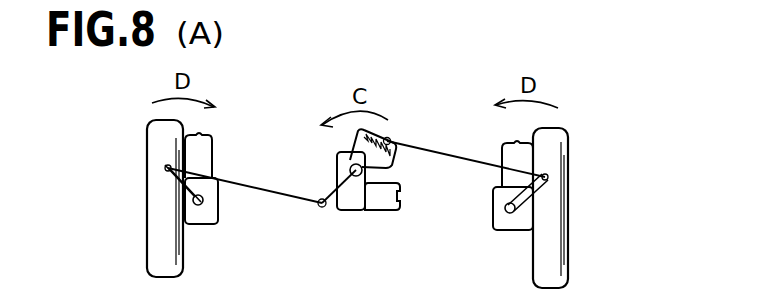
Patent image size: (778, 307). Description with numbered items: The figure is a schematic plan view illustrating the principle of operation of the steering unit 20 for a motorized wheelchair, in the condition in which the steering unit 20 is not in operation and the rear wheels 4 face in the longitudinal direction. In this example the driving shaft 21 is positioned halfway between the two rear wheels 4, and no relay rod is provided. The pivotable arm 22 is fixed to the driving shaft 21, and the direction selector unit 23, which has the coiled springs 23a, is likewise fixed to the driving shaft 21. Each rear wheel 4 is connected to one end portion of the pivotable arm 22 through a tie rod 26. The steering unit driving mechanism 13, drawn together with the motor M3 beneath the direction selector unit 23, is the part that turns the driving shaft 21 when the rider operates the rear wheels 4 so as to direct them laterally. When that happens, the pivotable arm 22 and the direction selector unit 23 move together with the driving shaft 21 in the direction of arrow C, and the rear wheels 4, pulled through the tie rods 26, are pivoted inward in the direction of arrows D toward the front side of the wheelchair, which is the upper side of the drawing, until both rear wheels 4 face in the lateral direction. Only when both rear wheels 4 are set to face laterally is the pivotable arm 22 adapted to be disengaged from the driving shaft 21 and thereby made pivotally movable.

The rear wheel 4 is at (155, 233).
The steering unit driving mechanism 13 is at (343, 205).
The steering unit 20 is at (463, 115).
The driving shaft 21 is at (360, 206).
The pivotable arm 22 is at (332, 197).
The direction selector unit 23 is at (410, 148).
The coiled spring 23a is at (377, 137).
The tie rod 26 is at (260, 192).
The steering motor M3 is at (388, 207).